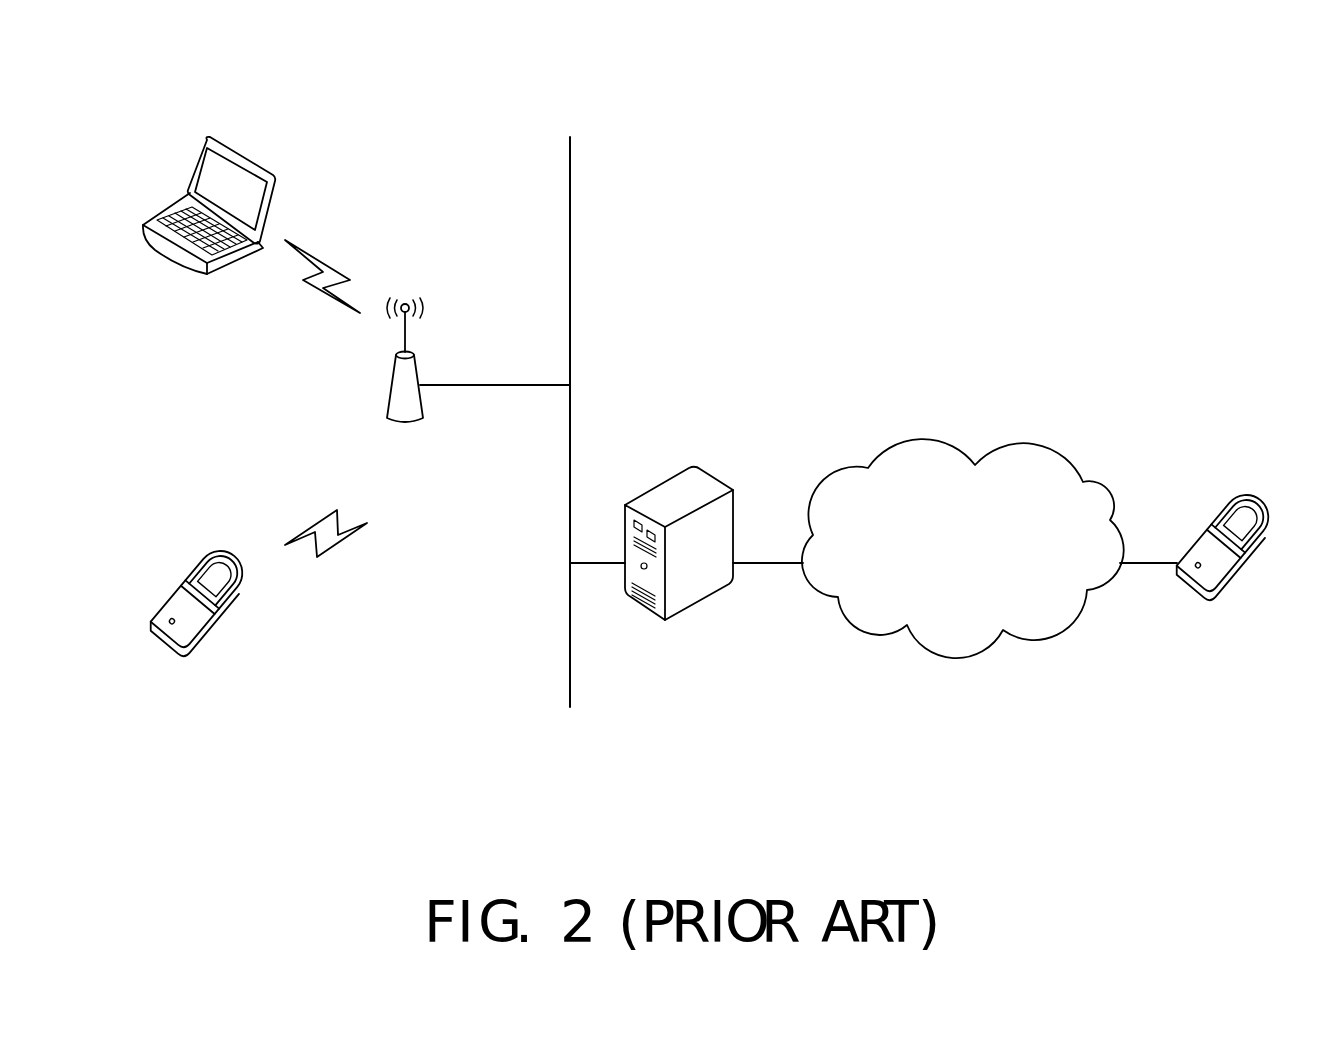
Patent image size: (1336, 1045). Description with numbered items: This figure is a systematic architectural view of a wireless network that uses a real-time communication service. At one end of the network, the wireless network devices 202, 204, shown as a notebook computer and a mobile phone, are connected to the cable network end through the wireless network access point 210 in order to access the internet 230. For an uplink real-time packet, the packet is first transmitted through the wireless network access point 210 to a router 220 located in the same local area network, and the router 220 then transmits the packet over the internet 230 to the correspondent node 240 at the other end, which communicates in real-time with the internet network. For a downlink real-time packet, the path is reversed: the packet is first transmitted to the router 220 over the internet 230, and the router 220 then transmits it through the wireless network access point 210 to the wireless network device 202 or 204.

The wireless network device 202 is at (250, 147).
The wireless network device 204 is at (222, 655).
The wireless network access point 210 is at (405, 293).
The router 220 is at (665, 467).
The internet 230 is at (963, 548).
The correspondent node 240 is at (1270, 488).